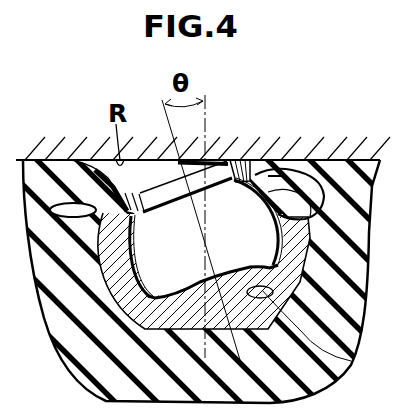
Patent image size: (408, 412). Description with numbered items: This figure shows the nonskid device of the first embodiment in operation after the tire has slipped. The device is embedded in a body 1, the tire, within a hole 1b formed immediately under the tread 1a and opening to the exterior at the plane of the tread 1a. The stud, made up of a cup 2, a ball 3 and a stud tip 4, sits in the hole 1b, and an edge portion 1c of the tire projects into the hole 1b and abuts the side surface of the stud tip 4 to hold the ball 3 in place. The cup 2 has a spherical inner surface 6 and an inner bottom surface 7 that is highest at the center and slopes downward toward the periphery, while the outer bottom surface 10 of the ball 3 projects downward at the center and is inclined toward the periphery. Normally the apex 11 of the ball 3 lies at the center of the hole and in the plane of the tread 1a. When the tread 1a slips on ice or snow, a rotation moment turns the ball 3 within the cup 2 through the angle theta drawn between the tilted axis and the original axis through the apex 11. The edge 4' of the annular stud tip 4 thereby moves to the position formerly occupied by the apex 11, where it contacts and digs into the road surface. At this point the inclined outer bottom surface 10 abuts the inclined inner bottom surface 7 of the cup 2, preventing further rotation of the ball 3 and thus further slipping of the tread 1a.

The body 1 is at (75, 283).
The tread 1a is at (350, 158).
The hole 1b is at (62, 202).
The edge portion 1c is at (97, 204).
The cup 2 is at (304, 256).
The ball 3 is at (333, 197).
The stud tip 4 is at (178, 155).
The edge 4' is at (241, 141).
The spherical inner surface 6 is at (278, 290).
The inner bottom surface 7 is at (351, 361).
The outer bottom surface 10 is at (273, 296).
The apex 11 is at (206, 118).